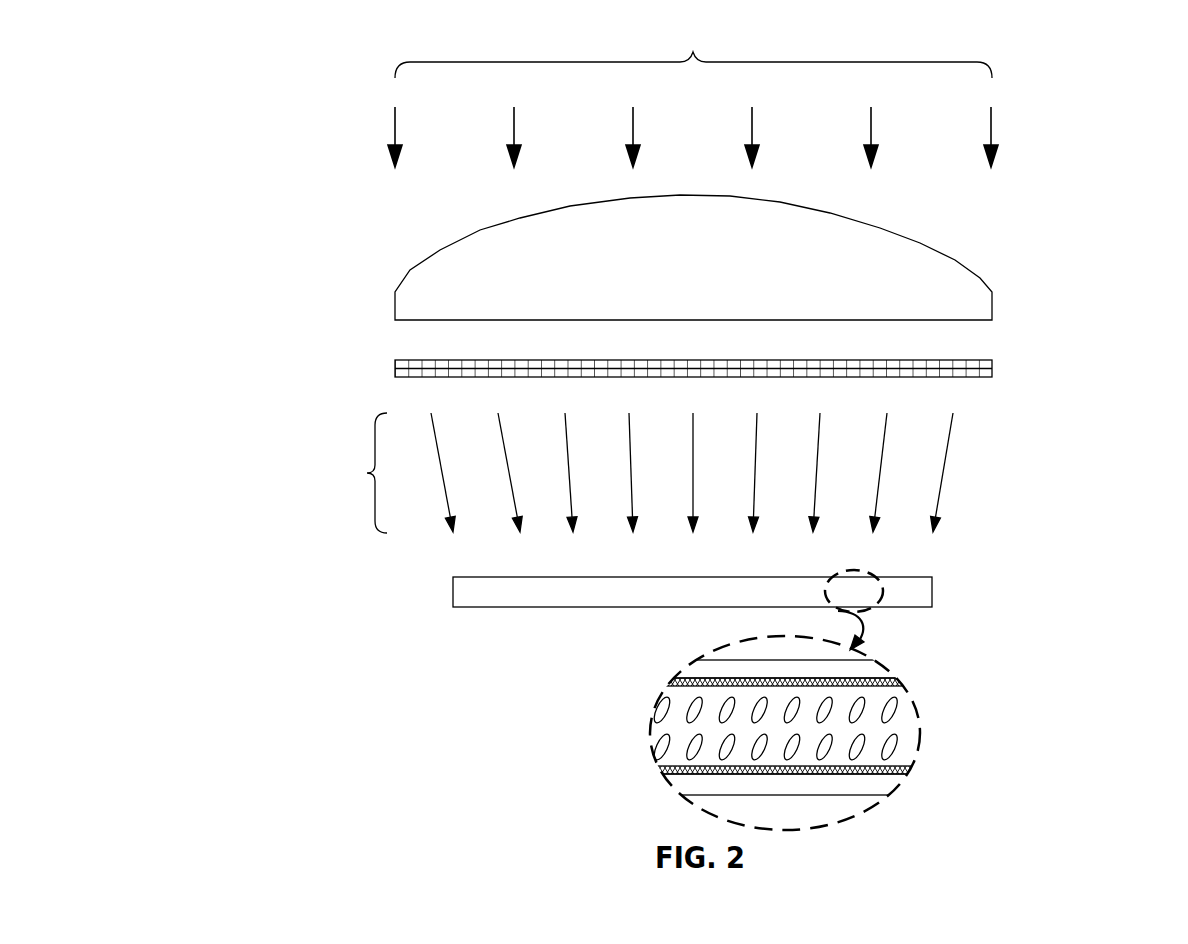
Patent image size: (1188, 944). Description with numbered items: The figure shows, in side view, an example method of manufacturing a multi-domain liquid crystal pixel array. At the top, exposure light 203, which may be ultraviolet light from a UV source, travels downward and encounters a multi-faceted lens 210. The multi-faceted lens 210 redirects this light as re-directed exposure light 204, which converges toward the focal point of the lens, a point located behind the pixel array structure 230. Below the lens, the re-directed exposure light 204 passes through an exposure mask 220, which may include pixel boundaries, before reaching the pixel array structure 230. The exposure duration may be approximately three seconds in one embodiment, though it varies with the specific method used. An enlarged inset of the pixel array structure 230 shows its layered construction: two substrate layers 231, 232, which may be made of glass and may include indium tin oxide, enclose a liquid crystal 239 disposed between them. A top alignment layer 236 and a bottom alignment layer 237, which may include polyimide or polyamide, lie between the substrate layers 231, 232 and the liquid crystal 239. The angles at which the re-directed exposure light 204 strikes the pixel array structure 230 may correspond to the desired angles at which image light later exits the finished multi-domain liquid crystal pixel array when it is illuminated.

The exposure light 203 is at (693, 99).
The multi-faceted lens 210 is at (973, 268).
The exposure mask 220 is at (992, 364).
The re-directed exposure light 204 is at (558, 473).
The pixel array structure 230 is at (932, 590).
The substrate layer 231 is at (785, 669).
The substrate layer 232 is at (785, 784).
The top alignment layer 236 is at (785, 682).
The bottom alignment layer 237 is at (785, 770).
The liquid crystal 239 is at (775, 728).